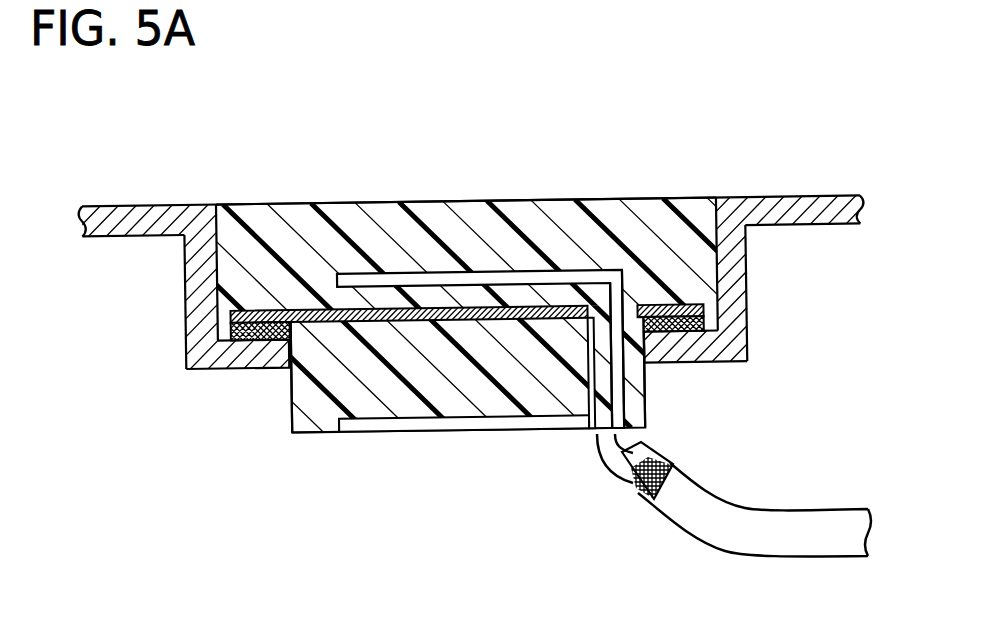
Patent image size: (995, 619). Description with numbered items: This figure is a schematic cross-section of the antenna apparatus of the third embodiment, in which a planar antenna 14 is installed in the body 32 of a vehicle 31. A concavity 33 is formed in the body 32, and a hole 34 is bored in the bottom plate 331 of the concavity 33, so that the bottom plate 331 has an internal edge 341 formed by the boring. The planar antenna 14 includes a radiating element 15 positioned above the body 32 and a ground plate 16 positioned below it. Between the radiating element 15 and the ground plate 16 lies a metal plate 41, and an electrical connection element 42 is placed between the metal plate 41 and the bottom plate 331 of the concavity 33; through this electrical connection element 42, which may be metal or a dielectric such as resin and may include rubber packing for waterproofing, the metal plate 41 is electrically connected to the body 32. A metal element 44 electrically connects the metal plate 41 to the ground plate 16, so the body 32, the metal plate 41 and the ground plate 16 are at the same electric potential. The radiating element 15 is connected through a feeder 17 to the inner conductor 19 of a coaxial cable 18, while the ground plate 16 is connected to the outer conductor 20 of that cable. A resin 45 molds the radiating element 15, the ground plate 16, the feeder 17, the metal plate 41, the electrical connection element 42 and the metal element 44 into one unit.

The planar antenna 14 is at (351, 178).
The radiating element 15 is at (423, 273).
The ground plate 16 is at (445, 434).
The feeder 17 is at (630, 300).
The coaxial cable 18 is at (668, 518).
The inner conductor 19 is at (624, 440).
The outer conductor 20 is at (602, 462).
The vehicle 31 is at (125, 182).
The body 32 is at (172, 203).
The concavity 33 is at (227, 268).
The bottom plate 331 is at (247, 360).
The hole 34 is at (333, 362).
The internal edge 341 is at (290, 380).
The metal plate 41 is at (262, 310).
The electrical connection element 42 is at (203, 360).
The metal element 44 is at (580, 377).
The resin 45 is at (532, 214).